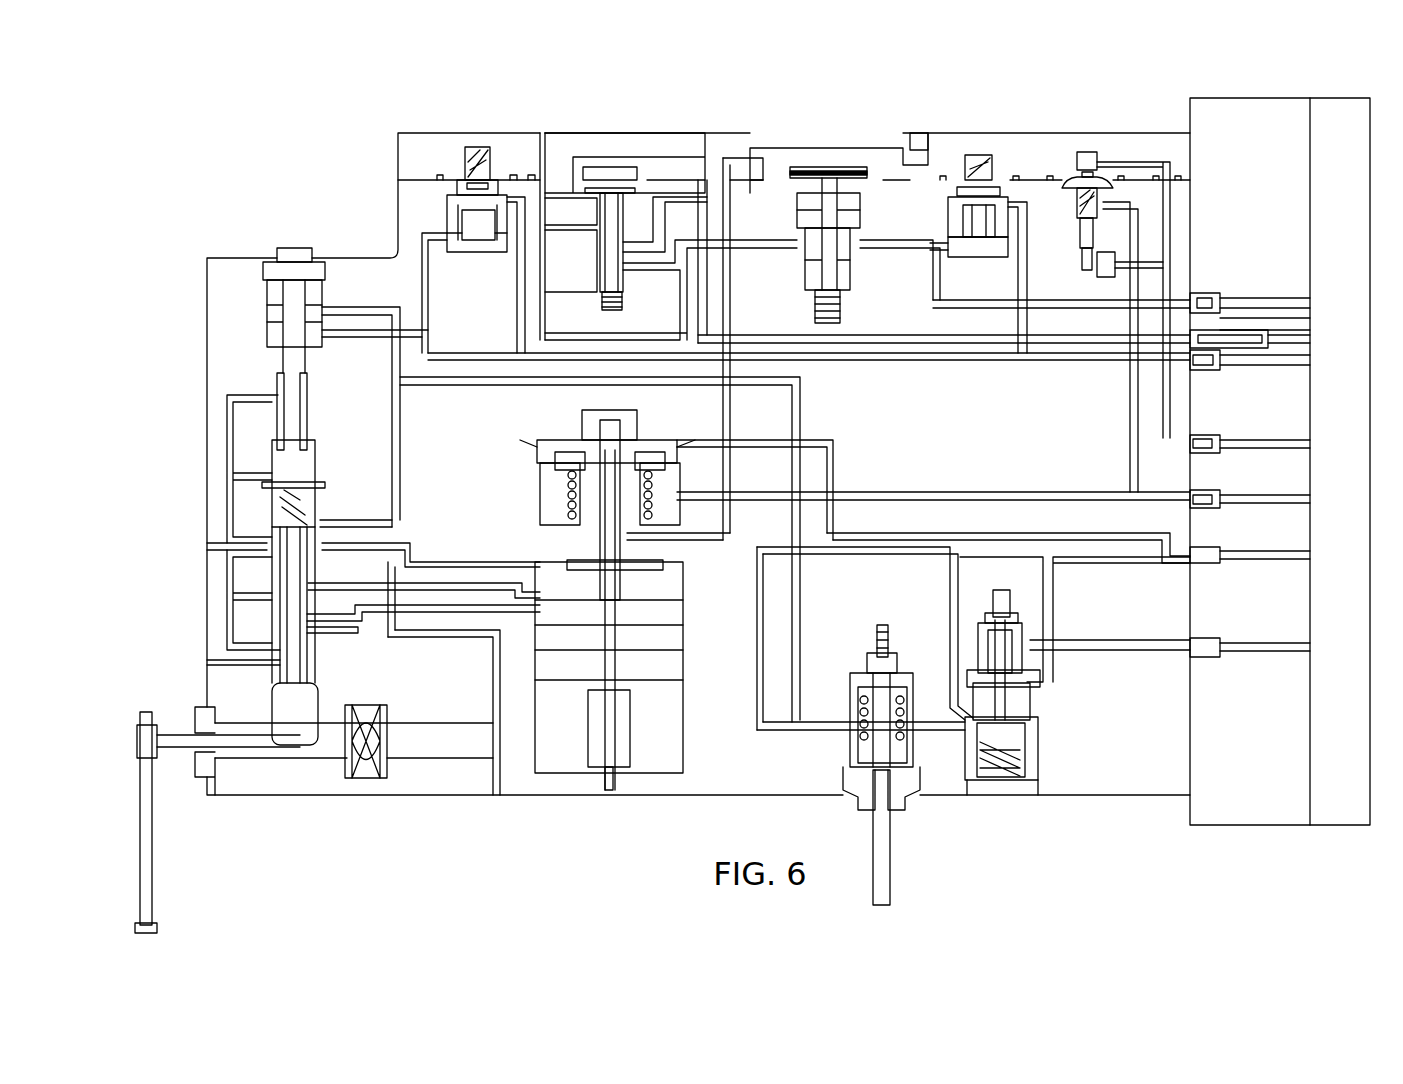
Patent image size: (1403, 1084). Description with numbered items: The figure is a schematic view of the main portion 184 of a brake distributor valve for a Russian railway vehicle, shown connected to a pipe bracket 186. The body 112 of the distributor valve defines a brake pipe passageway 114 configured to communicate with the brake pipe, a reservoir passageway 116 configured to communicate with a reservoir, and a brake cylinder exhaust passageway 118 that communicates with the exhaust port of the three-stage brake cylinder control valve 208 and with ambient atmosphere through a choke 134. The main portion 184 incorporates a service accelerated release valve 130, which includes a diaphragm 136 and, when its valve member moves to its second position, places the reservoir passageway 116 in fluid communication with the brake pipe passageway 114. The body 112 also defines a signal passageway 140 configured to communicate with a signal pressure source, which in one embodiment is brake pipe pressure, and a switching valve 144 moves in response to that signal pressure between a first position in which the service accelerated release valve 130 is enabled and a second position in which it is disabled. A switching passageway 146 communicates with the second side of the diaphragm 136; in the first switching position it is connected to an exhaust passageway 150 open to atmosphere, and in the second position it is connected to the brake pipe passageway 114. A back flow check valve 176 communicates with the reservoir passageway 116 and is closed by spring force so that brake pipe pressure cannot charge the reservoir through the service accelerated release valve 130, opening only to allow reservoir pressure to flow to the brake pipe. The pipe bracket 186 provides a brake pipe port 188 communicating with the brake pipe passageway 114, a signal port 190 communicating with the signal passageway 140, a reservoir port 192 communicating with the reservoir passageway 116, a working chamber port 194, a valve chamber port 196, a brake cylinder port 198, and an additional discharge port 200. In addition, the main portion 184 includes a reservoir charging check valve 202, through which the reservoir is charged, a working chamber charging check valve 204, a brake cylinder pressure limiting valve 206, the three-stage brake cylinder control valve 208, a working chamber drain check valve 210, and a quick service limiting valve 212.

The body 112 is at (1060, 150).
The brake pipe passageway 114 is at (900, 248).
The reservoir passageway 116 is at (780, 270).
The brake cylinder exhaust passageway 118 is at (735, 156).
The service accelerated release valve 130 is at (845, 158).
The choke 134 is at (933, 148).
The diaphragm 136 is at (878, 190).
The signal passageway 140 is at (663, 157).
The switching valve 144 is at (609, 162).
The switching passageway 146 is at (750, 190).
The exhaust passageway 150 is at (526, 157).
The back flow check valve 176 is at (455, 186).
The main portion 184 is at (352, 162).
The pipe bracket 186 is at (1246, 818).
The brake pipe port 188 is at (1206, 300).
The signal port 190 is at (1248, 337).
The reservoir port 192 is at (1206, 366).
The working chamber port 194 is at (1206, 450).
The valve chamber port 196 is at (1206, 504).
The brake cylinder port 198 is at (1206, 560).
The additional discharge port 200 is at (1206, 652).
The reservoir charging check valve 202 is at (997, 182).
The working chamber charging check valve 204 is at (1072, 200).
The brake cylinder pressure limiting valve 206 is at (270, 455).
The three-stage brake cylinder control valve 208 is at (598, 546).
The working chamber drain check valve 210 is at (855, 697).
The quick service limiting valve 212 is at (1035, 705).